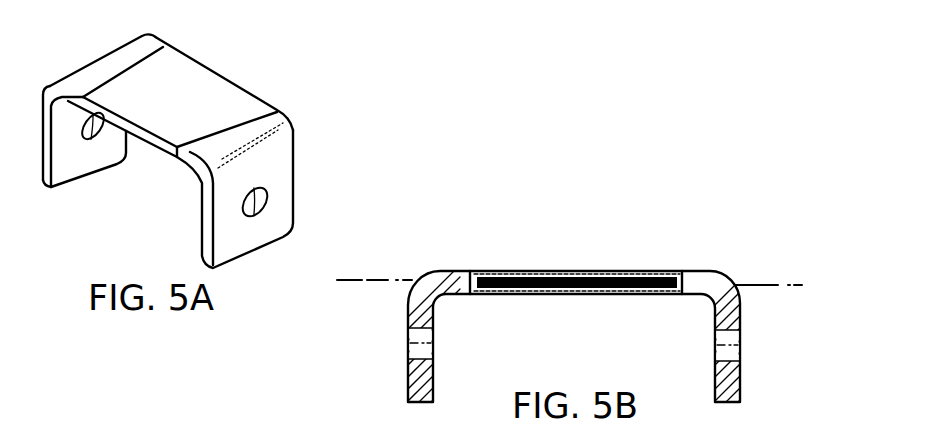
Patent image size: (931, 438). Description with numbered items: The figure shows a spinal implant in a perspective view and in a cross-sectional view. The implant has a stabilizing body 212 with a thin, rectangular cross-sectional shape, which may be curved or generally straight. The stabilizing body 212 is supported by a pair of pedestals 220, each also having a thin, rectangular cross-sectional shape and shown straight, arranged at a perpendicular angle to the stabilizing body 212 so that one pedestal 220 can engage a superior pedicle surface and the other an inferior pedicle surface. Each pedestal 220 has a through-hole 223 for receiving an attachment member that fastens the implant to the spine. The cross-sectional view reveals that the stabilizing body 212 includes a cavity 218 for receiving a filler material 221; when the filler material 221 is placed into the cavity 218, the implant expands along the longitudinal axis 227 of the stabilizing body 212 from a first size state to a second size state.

In FIG. 5A, the stabilizing body 212 is at (211, 65).
In FIG. 5B, the stabilizing body 212 is at (577, 242).
In FIG. 5B, the cavity 218 is at (518, 295).
In FIG. 5A, the pedestals 220 is at (176, 19).
In FIG. 5B, the pedestals 220 is at (462, 271).
In FIG. 5B, the filler material 221 is at (597, 295).
In FIG. 5A, the through-holes 223 is at (101, 131).
In FIG. 5B, the through-holes 223 is at (428, 345).
In FIG. 5B, the longitudinal axis 227 is at (772, 285).